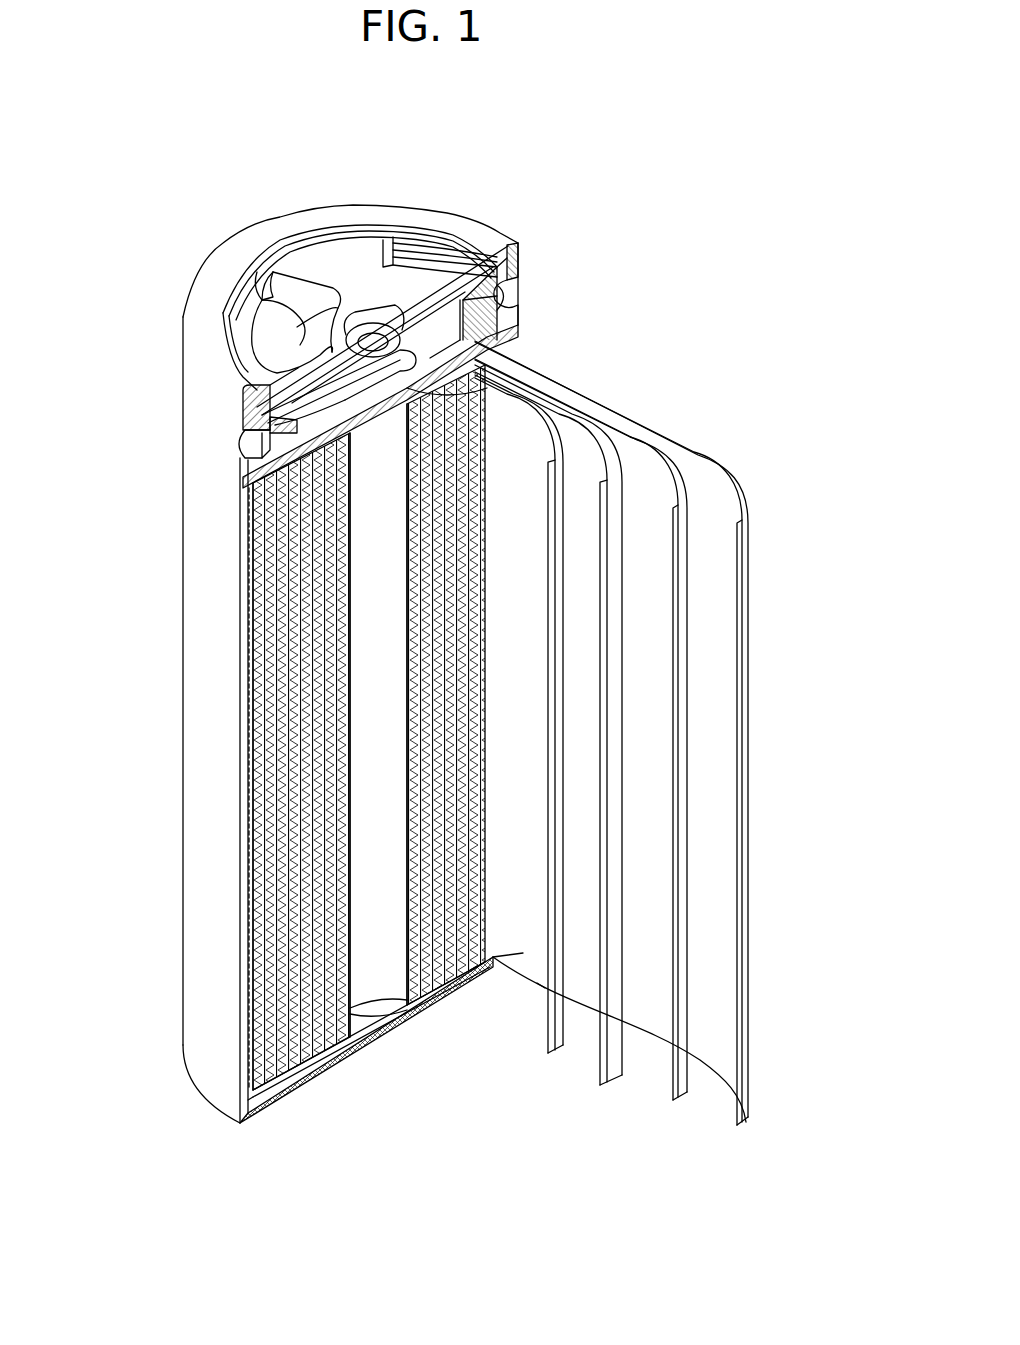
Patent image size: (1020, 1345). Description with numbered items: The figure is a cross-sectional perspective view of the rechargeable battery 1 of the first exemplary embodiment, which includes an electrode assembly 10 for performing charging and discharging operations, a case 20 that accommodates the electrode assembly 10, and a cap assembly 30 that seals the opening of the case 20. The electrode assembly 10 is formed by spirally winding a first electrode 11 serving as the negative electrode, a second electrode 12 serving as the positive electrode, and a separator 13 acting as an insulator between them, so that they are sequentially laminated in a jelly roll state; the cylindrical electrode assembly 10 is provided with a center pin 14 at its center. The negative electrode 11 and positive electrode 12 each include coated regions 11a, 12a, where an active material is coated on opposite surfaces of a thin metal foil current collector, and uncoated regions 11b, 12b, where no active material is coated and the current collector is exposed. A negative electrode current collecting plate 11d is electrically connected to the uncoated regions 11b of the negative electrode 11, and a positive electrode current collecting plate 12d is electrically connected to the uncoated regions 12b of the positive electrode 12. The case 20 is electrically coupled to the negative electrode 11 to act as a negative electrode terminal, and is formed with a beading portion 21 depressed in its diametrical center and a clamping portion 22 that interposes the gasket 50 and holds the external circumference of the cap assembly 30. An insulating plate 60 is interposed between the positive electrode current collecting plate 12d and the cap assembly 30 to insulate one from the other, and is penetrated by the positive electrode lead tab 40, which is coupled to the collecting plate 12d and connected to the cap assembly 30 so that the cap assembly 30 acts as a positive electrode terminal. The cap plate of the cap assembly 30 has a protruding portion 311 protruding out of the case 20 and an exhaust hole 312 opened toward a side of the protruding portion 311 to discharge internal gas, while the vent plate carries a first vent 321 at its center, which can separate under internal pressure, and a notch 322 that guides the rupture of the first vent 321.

The rechargeable battery 1 is at (329, 105).
The electrode assembly 10 is at (266, 866).
The first electrode 11 is at (544, 1110).
The coated region 11a is at (523, 953).
The uncoated region 11b is at (537, 983).
The negative electrode current collecting plate 11d is at (318, 1080).
The second electrode 12 is at (721, 360).
The coated region 12a is at (652, 475).
The uncoated region 12b is at (642, 435).
The positive electrode current collecting plate 12d is at (278, 482).
The separator 13 is at (745, 1108).
The center pin 14 is at (372, 995).
The case 20 is at (200, 663).
The beading portion 21 is at (252, 440).
The clamping portion 22 is at (250, 395).
The cap assembly 30 is at (232, 333).
The protruding portion 311 is at (312, 262).
The exhaust hole 312 is at (262, 290).
The first vent 321 is at (374, 338).
The notch 322 is at (390, 300).
The positive electrode lead tab 40 is at (503, 365).
The gasket 50 is at (498, 285).
The insulating plate 60 is at (258, 470).